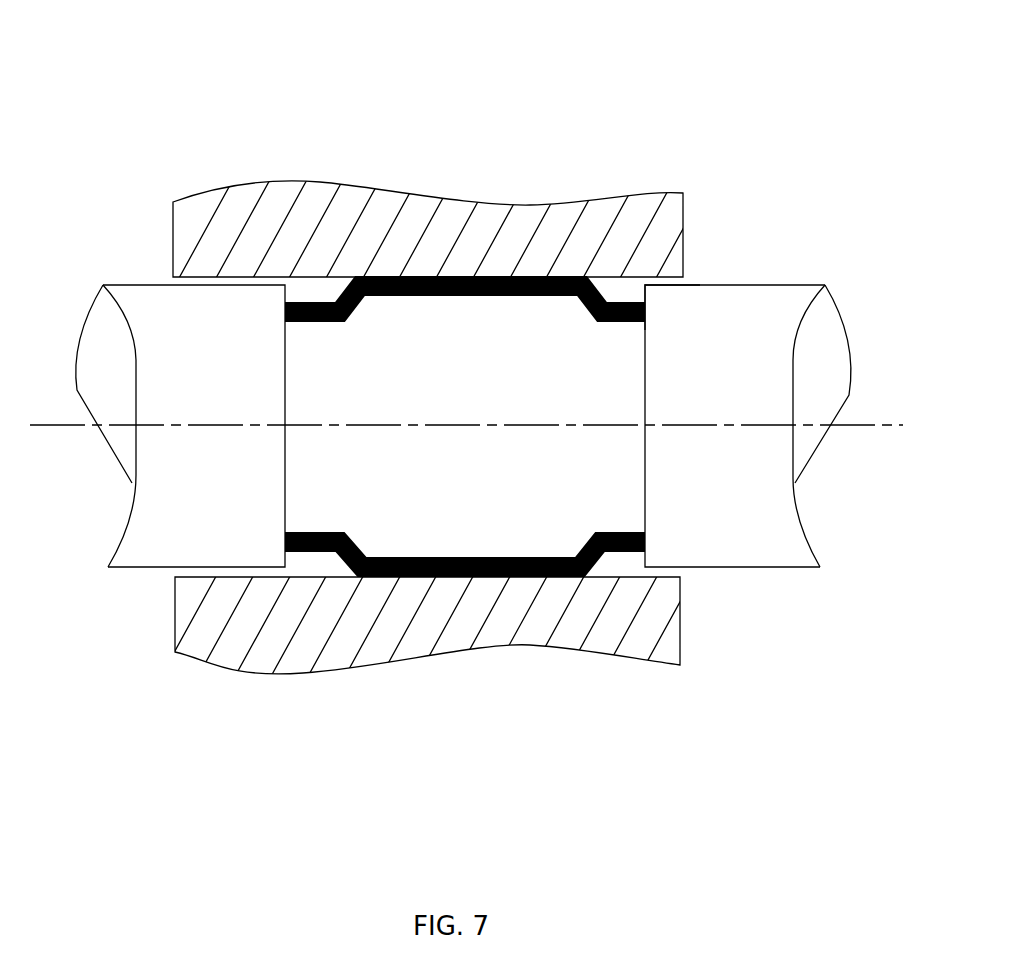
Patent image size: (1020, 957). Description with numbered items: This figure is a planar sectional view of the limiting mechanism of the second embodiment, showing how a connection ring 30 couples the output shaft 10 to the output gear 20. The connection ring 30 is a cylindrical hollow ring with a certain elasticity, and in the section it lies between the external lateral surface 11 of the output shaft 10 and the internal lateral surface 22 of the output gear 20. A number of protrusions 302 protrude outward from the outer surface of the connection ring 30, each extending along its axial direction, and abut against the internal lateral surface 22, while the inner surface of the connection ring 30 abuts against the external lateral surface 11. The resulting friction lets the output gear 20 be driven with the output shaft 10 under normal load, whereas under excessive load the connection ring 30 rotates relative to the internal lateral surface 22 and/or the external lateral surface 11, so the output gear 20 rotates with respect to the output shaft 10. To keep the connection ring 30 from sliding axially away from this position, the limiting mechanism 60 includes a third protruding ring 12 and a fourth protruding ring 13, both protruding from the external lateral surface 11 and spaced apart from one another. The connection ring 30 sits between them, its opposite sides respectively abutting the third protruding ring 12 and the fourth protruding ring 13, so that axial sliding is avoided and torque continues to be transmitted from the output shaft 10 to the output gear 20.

The output shaft 10 is at (525, 370).
The external lateral surface 11 is at (420, 300).
The third protruding ring 12 is at (257, 548).
The fourth protruding ring 13 is at (697, 547).
The output gear 20 is at (346, 233).
The internal lateral surface 22 is at (671, 291).
The connection ring 30 is at (465, 381).
The protrusions 302 is at (457, 577).
The limiting mechanism 60 is at (463, 562).